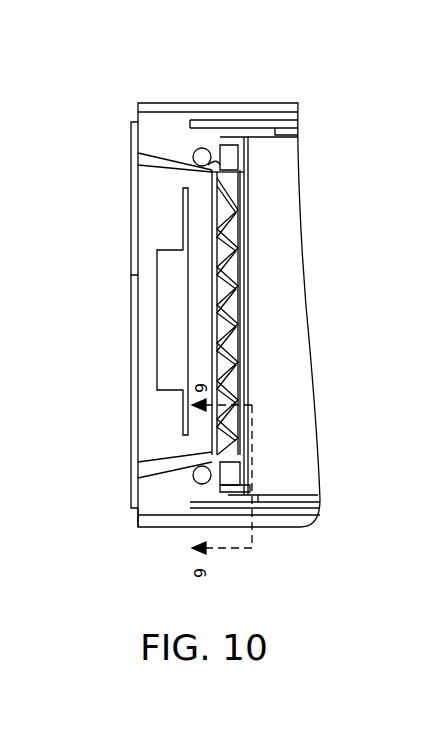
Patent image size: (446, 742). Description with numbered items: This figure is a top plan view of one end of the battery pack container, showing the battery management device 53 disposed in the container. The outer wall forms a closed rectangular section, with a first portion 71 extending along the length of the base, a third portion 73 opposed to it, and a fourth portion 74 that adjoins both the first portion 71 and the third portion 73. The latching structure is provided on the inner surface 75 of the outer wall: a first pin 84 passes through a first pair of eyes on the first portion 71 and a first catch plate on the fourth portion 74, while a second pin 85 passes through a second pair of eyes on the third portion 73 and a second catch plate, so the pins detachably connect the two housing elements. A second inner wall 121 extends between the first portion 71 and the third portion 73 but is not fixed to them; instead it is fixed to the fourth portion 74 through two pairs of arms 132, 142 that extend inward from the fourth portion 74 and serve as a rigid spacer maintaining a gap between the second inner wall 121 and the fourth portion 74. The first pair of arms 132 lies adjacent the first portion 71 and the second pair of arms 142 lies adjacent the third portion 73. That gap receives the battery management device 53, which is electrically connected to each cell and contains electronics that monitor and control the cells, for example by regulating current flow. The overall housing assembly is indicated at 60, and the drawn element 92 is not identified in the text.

The housing assembly 60 is at (134, 93).
The first pair of arms 132 is at (120, 143).
The fourth portion 74 is at (128, 405).
The second pair of arms 142 is at (130, 524).
The first pin 84 is at (205, 154).
The second pin 85 is at (222, 474).
The third portion 73 is at (291, 108).
The first portion 71 is at (268, 527).
The inner surface 75 is at (290, 495).
The plate 92 is at (160, 210).
The battery management device 53 is at (178, 277).
The second inner wall 121 is at (245, 318).